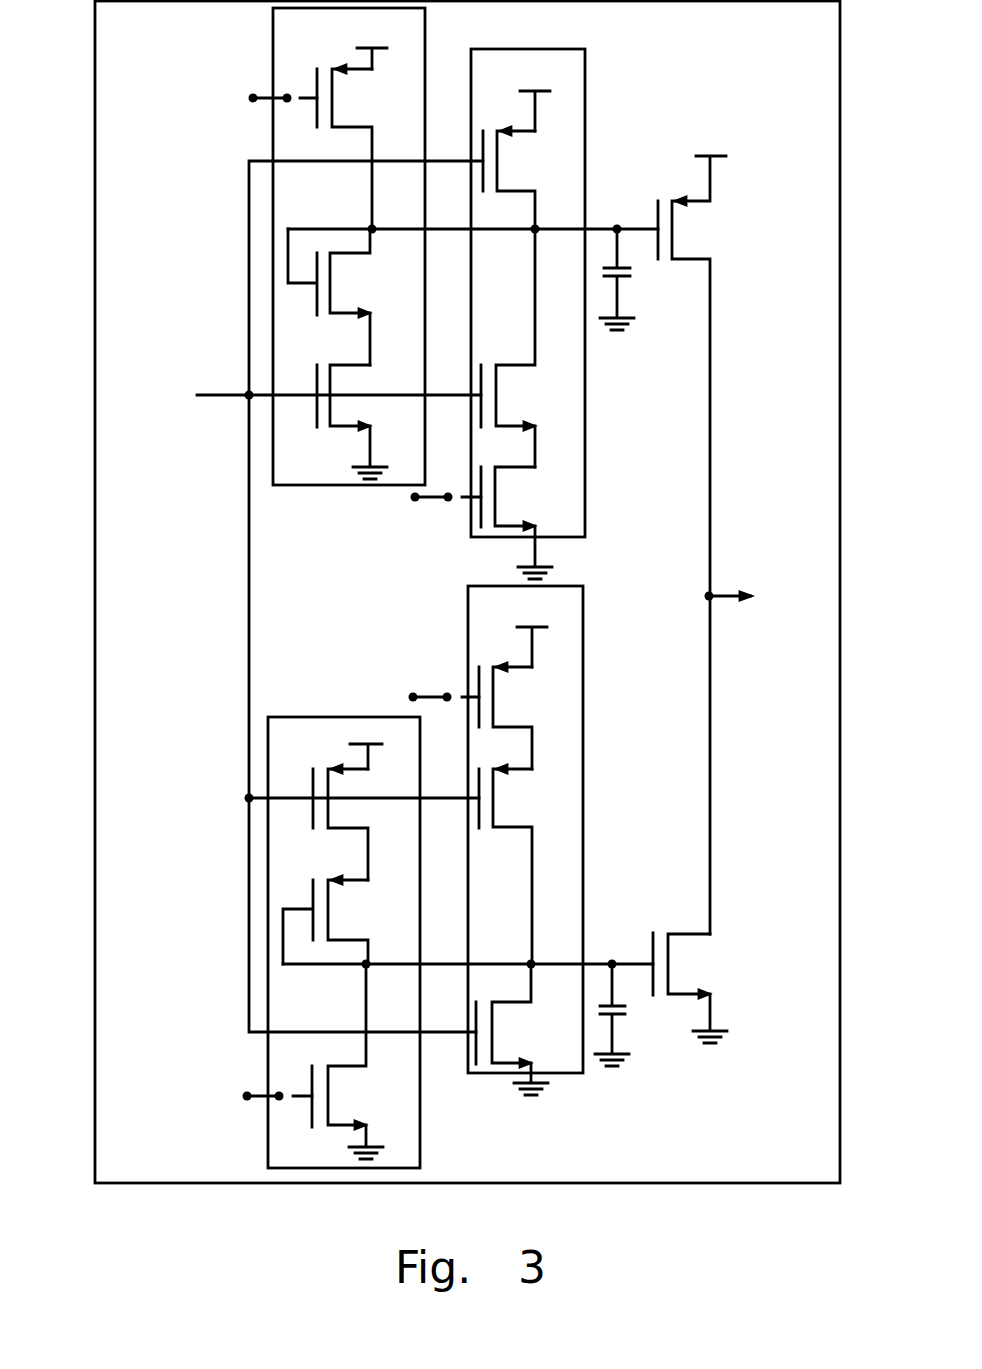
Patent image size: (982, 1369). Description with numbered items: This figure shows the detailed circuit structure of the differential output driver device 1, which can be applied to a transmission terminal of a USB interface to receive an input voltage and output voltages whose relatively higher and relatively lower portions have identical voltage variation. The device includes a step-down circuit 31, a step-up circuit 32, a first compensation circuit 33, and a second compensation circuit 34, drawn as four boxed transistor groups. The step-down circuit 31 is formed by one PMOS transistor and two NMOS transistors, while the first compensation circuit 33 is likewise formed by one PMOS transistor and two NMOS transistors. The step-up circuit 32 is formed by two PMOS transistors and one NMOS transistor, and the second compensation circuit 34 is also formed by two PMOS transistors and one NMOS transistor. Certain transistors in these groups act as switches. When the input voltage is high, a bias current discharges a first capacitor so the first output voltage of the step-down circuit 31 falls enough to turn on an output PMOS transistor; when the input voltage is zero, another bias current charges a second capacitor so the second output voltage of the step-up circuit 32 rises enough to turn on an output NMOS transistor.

The differential output driver device 1 is at (603, 1167).
The step-down circuit 31 is at (288, 128).
The step-up circuit 32 is at (278, 1067).
The first compensation circuit 33 is at (575, 118).
The second compensation circuit 34 is at (563, 1064).